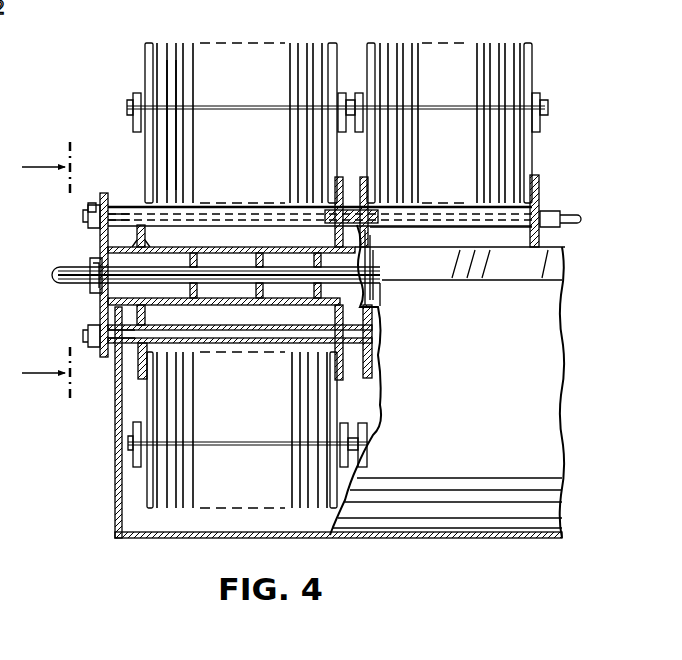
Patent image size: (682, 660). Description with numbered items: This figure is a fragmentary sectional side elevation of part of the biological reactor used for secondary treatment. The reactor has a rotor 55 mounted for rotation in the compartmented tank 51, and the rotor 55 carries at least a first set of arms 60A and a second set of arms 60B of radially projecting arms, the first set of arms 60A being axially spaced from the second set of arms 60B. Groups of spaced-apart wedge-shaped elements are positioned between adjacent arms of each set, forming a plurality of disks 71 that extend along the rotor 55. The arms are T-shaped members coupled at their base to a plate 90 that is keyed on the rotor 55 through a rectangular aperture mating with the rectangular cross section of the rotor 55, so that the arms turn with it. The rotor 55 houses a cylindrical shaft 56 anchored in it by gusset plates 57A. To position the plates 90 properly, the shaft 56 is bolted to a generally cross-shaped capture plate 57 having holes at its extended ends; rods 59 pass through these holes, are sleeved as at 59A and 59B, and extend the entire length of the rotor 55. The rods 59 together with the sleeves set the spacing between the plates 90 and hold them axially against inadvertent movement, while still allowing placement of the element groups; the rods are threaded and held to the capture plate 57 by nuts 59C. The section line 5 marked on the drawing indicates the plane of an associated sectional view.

The section line 5- 5 is at (36, 271).
The compartmented tank 51 is at (116, 472).
The rotor 55 is at (423, 273).
The cylindrical shaft 56 is at (85, 272).
The capture plate 57 is at (102, 193).
The gusset plates 57A is at (198, 262).
The rods 59 is at (350, 177).
The sleeve 59A is at (126, 208).
The sleeve 59B is at (268, 212).
The nuts 59C is at (90, 207).
The first set of arms 60A is at (147, 43).
The second set of arms 60B is at (335, 43).
The disks 71 is at (182, 43).
The plate 90 is at (536, 193).